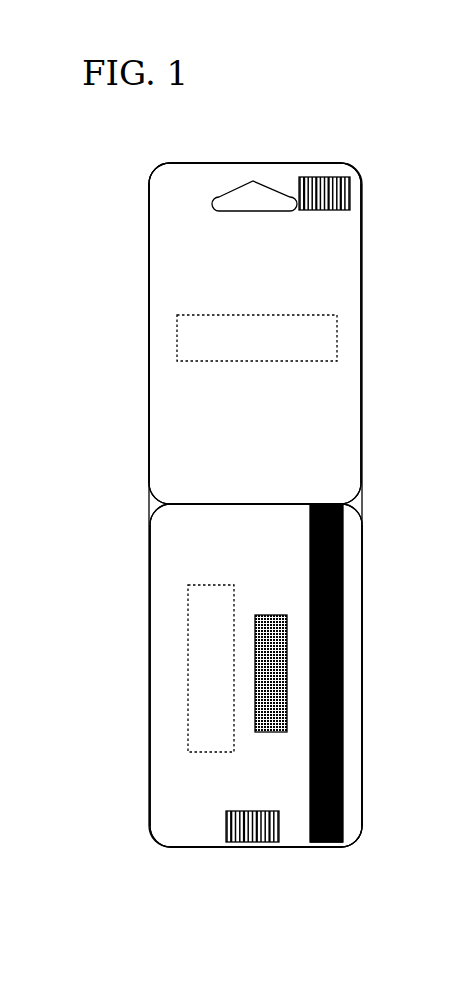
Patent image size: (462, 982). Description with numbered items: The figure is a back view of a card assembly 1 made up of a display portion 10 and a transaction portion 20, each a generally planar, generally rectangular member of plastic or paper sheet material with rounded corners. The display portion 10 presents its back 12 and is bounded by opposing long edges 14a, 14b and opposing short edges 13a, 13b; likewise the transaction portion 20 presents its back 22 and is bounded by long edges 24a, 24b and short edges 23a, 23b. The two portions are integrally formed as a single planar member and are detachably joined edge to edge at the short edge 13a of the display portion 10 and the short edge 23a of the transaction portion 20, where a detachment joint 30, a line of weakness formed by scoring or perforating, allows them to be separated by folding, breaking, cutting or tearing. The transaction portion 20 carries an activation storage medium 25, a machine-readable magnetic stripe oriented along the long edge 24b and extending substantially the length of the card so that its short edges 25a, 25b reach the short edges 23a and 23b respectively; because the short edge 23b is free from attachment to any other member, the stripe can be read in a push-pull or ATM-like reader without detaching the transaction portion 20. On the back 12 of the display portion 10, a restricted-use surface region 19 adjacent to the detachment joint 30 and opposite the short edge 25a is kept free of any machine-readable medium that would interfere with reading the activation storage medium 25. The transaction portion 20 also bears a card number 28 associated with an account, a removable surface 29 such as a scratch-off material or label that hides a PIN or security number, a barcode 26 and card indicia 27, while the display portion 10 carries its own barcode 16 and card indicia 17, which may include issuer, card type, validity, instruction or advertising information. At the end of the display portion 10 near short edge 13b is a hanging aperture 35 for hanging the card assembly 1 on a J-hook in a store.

The card assembly 1 is at (121, 181).
The display portion 10 is at (364, 261).
The back of display portion 12 is at (167, 408).
The short edge of display portion 13a is at (207, 504).
The short edge of display portion 13b is at (252, 163).
The long edge of display portion 14a is at (149, 322).
The long edge of display portion 14b is at (361, 318).
The barcode 16 is at (352, 196).
The card indicia 17 is at (337, 355).
The restricted-use surface region 19 is at (341, 499).
The transaction portion 20 is at (149, 722).
The back of transaction portion 22 is at (163, 598).
The short edge of transaction portion 23a is at (197, 505).
The short edge of transaction portion 23b is at (198, 847).
The long edge of transaction portion 24a is at (150, 692).
The long edge of transaction portion 24b is at (362, 680).
The activation storage medium 25 is at (344, 567).
The short edge of activation storage medium 25a is at (344, 505).
The short edge of activation storage medium 25b is at (340, 844).
The barcode 26 is at (250, 843).
The card indicia 27 is at (187, 640).
The card number 28 is at (300, 724).
The removable surface 29 is at (274, 614).
The detachment joint 30 is at (187, 504).
The hanging aperture 35 is at (243, 184).